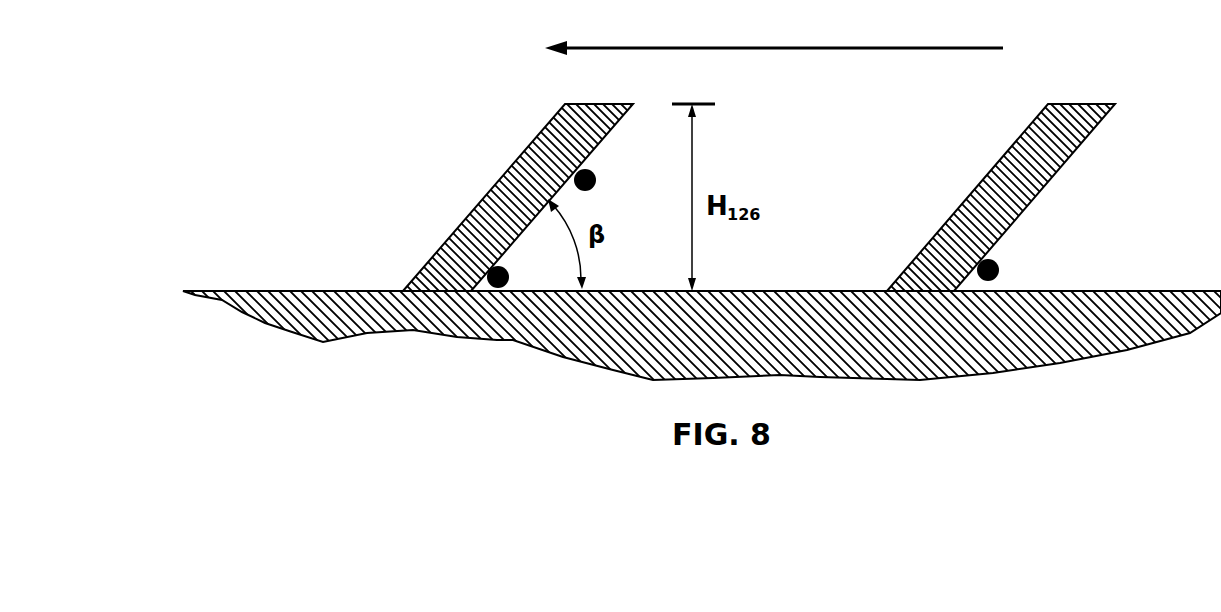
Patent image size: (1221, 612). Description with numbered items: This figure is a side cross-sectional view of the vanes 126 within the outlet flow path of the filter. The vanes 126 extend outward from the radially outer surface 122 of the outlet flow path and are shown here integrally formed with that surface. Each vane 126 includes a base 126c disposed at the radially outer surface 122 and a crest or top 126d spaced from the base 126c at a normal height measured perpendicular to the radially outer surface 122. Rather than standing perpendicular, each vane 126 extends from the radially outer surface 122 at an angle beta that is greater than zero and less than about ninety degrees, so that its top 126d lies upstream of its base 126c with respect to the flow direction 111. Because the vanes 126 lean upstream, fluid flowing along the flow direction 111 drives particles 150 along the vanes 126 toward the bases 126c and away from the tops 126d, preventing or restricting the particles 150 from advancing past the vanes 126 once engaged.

The flow direction 111 is at (783, 46).
The radially outer surface 122 is at (275, 290).
The vanes 126 is at (482, 176).
The base 126c is at (391, 283).
The top 126d is at (553, 98).
The particles 150 is at (594, 172).